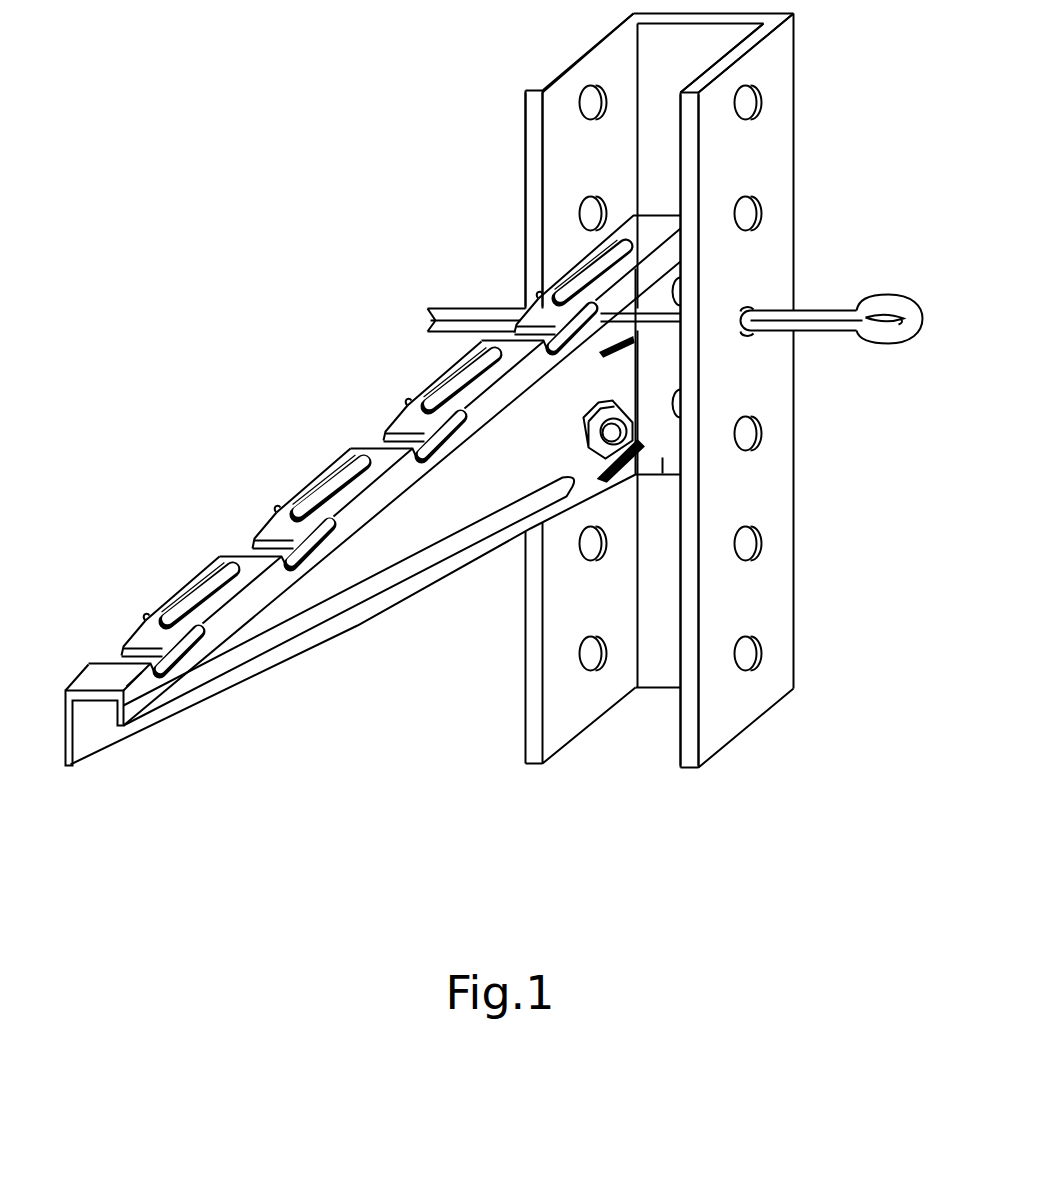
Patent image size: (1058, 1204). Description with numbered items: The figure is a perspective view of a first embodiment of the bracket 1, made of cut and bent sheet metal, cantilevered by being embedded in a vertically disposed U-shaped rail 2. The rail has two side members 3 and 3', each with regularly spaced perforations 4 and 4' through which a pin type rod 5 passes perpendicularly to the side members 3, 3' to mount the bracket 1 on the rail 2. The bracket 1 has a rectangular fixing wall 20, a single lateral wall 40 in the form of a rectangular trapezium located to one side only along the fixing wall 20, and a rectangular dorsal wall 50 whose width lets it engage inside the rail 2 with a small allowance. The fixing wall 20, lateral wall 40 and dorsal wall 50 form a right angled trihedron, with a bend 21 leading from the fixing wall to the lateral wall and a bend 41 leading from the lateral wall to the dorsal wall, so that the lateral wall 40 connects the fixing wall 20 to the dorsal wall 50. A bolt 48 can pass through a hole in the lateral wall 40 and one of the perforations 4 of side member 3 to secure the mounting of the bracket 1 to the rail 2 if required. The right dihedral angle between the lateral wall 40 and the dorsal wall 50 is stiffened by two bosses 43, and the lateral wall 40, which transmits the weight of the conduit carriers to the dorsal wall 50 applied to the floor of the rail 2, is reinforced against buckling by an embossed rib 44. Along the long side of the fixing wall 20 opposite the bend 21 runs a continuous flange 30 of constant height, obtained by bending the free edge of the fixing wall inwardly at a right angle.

The bracket 1 is at (358, 622).
The U-shaped rail 2 is at (652, 690).
The side member 3 is at (509, 342).
The side member 3' is at (786, 390).
The perforations 4 is at (514, 243).
The perforations 4' is at (808, 211).
The pin type rod 5 is at (885, 332).
The fixing wall 20 is at (280, 514).
The bend 21 is at (166, 603).
The continuous flange 30 is at (168, 682).
The lateral wall 40 is at (80, 733).
The bend 41 is at (635, 355).
The bosses 43 is at (640, 445).
The embossed rib 44 is at (421, 562).
The bolt 48 is at (593, 402).
The dorsal wall 50 is at (663, 460).